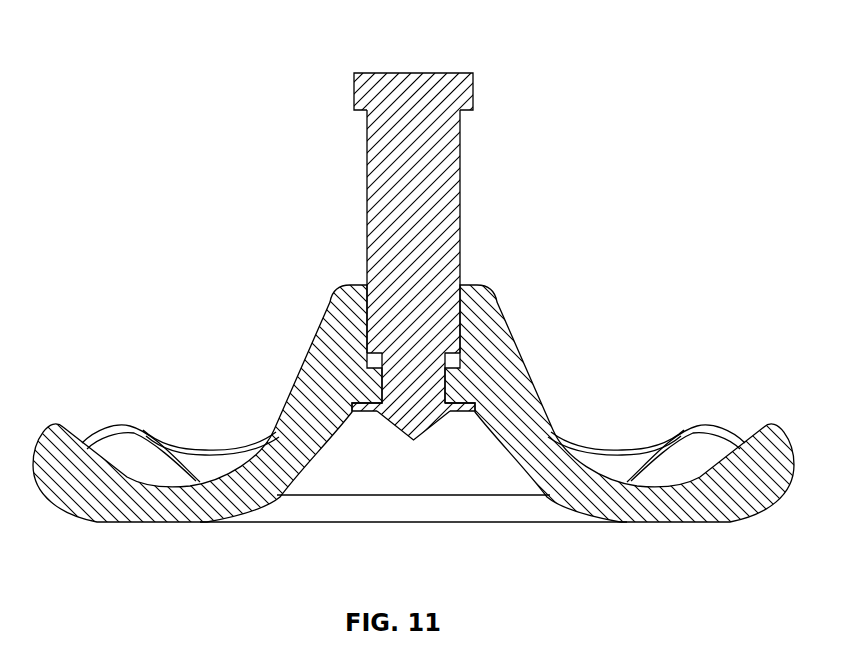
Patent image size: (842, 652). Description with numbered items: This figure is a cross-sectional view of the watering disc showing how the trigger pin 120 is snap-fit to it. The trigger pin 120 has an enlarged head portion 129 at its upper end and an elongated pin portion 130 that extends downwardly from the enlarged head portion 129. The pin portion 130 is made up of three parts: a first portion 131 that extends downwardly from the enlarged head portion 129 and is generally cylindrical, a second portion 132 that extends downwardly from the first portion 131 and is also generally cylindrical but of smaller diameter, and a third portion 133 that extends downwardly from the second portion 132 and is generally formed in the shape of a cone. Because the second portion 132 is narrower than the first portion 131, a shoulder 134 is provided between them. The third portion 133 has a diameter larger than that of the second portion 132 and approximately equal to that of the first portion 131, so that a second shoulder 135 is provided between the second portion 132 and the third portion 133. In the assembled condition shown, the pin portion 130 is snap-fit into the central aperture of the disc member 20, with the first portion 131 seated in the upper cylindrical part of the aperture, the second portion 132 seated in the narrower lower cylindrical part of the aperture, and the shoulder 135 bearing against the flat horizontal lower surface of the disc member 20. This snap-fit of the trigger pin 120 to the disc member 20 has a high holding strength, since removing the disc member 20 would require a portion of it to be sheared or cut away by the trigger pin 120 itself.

The disc member 20 is at (556, 421).
The trigger pin 120 is at (396, 254).
The enlarged head portion 129 is at (430, 91).
The pin portion 130 is at (454, 230).
The first portion 131 is at (372, 146).
The second portion 132 is at (397, 368).
The third portion 133 is at (413, 441).
The shoulder 134 is at (462, 357).
The shoulder 135 is at (449, 405).